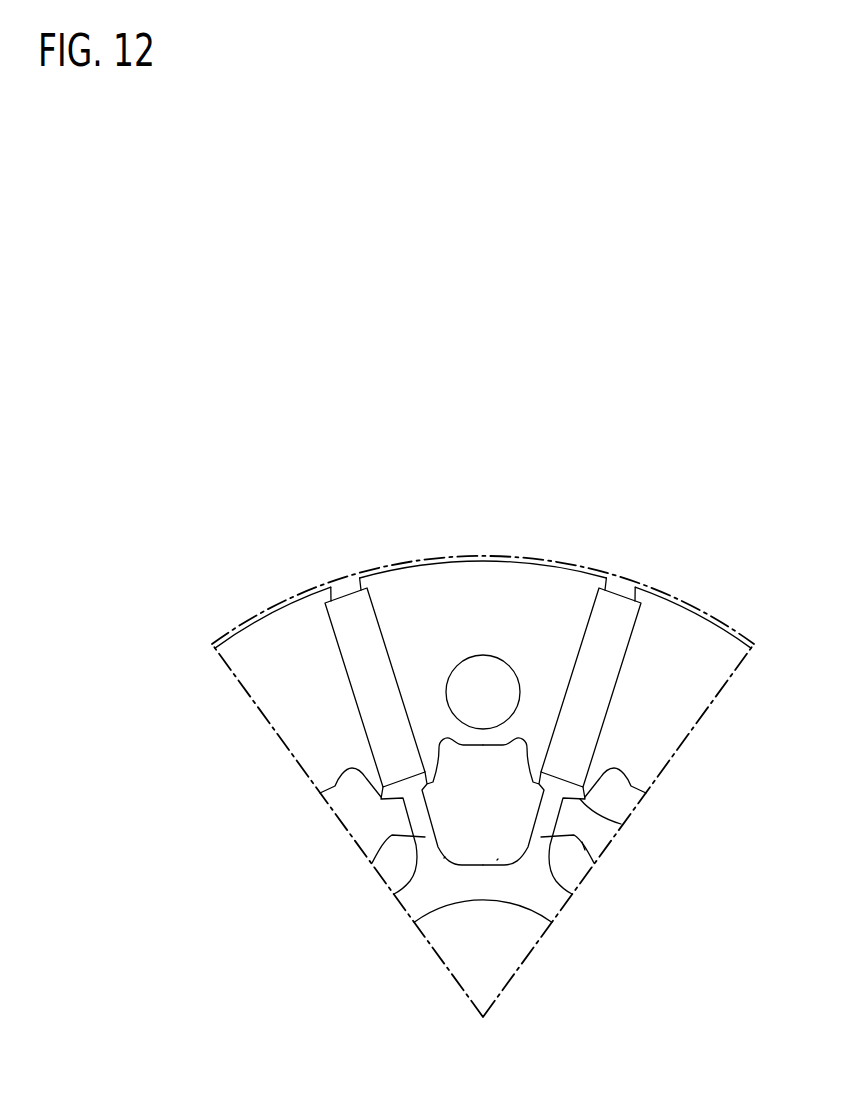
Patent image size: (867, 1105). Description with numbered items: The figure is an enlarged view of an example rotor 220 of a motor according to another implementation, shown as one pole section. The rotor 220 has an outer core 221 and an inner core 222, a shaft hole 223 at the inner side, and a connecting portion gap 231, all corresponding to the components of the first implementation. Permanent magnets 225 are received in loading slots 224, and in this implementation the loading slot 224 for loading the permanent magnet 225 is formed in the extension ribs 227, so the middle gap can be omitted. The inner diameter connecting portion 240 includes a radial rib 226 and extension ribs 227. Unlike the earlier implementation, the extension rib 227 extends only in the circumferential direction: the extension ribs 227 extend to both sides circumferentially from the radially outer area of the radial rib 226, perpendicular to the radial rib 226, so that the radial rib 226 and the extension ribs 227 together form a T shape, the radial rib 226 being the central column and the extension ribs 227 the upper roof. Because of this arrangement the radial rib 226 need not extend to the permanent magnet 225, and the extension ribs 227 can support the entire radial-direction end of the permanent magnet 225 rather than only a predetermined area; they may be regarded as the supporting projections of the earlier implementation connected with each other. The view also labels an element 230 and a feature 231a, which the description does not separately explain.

The rotor core 220 is at (652, 560).
The outer core 221 is at (688, 690).
The inner core 222 is at (412, 918).
The shaft hole 223 is at (513, 905).
The loading slot 224 is at (630, 643).
The permanent magnet 225 is at (603, 632).
The radial rib 226 is at (372, 863).
The extension rib 227 is at (386, 799).
The center hole 230 is at (468, 655).
The connecting portion gap 231 is at (445, 858).
The bridge protrusion 231a is at (497, 860).
The inner diameter connecting portion 240 is at (607, 813).